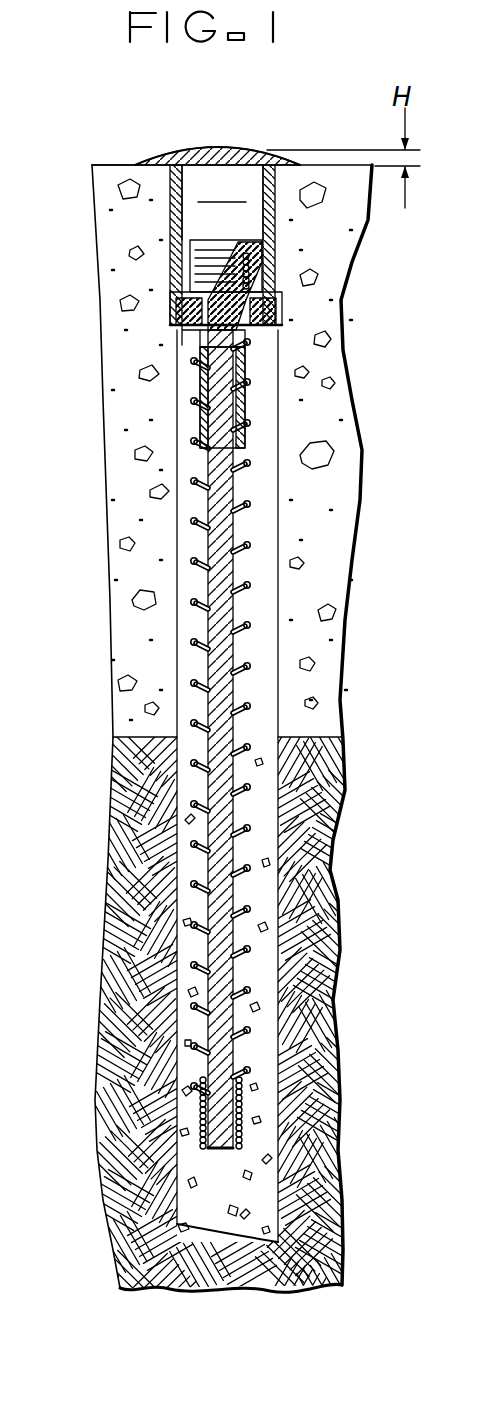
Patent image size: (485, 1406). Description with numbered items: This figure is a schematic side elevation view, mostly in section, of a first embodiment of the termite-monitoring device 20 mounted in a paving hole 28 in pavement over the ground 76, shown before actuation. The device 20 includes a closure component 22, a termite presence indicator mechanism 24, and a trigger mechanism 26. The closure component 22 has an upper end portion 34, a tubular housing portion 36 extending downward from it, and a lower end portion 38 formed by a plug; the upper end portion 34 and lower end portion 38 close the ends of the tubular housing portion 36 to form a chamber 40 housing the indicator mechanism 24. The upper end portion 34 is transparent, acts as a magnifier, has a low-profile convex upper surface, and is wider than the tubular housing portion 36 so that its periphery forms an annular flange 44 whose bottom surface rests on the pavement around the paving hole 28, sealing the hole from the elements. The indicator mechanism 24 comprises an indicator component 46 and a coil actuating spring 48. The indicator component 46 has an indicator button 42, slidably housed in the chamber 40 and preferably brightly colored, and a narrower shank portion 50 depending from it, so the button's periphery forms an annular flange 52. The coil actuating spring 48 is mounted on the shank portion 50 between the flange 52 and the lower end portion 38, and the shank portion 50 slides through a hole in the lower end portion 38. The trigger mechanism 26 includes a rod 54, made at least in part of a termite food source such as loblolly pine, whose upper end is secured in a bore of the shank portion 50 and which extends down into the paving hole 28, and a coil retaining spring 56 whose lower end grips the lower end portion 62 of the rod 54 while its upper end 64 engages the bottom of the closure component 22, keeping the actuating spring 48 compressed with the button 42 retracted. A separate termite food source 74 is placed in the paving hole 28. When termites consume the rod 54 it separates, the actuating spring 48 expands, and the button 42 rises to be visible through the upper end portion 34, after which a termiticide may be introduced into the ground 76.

The termite-monitoring device 20 is at (322, 99).
The closure component 22 is at (162, 152).
The termite presence indicator mechanism 24 is at (186, 276).
The trigger mechanism 26 is at (190, 626).
The paving hole 28 is at (178, 470).
The upper end portion 34 is at (222, 148).
The tubular housing portion 36 is at (278, 222).
The lower end portion 38 is at (285, 300).
The chamber 40 is at (222, 190).
The indicator button 42 is at (176, 212).
The annular flange 44 is at (138, 170).
The indicator component 46 is at (252, 346).
The coil actuating spring 48 is at (188, 265).
The shank portion 50 is at (252, 395).
The annular flange 52 is at (256, 248).
The rod 54 is at (262, 492).
The coil retaining spring 56 is at (194, 520).
The lower end portion of the rod 62 is at (218, 1149).
The upper end of the coil retaining spring 64 is at (185, 345).
The termite food source 74 is at (178, 1213).
The ground 76 is at (325, 1080).